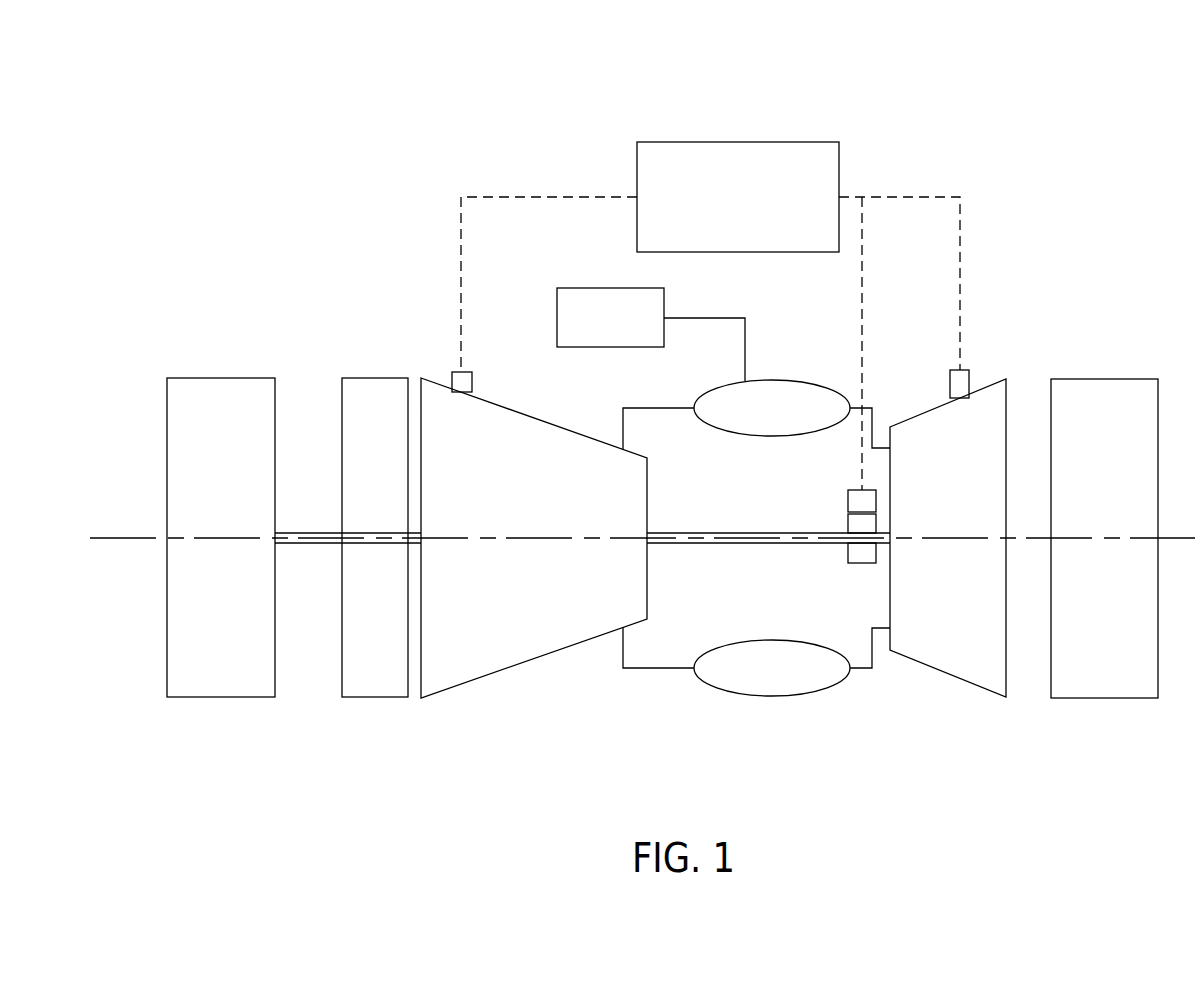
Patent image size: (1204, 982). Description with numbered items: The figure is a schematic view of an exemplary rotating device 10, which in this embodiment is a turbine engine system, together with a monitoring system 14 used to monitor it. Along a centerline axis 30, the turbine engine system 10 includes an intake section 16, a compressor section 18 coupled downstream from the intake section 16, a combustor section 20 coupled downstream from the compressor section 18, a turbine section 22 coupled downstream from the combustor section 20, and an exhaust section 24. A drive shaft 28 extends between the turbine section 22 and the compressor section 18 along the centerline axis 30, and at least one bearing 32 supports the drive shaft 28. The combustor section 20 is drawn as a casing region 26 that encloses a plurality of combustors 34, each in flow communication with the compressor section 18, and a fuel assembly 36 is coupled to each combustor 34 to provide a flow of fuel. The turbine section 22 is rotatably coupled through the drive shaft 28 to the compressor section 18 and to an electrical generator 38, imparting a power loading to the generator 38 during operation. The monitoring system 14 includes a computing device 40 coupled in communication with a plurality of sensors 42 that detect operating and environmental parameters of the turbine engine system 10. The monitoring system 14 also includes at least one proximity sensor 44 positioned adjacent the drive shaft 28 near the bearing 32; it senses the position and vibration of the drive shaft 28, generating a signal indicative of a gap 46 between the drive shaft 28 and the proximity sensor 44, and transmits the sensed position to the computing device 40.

The rotating device 10 is at (662, 380).
The monitoring system 14 is at (645, 380).
The intake section 16 is at (373, 378).
The compressor section 18 is at (517, 411).
The combustor section 20 is at (756, 494).
The turbine section 22 is at (993, 379).
The exhaust section 24 is at (1118, 379).
The combustor casing 26 is at (726, 475).
The drive shaft 28 is at (730, 532).
The centerline axis 30 is at (118, 538).
The bearing 32 is at (848, 556).
The combustors 34 is at (782, 379).
The fuel assembly 36 is at (583, 288).
The electrical generator 38 is at (181, 378).
The computing device 40 is at (760, 142).
The sensors 42 is at (457, 372).
The proximity sensor 44 is at (848, 492).
The gap 46 is at (838, 517).